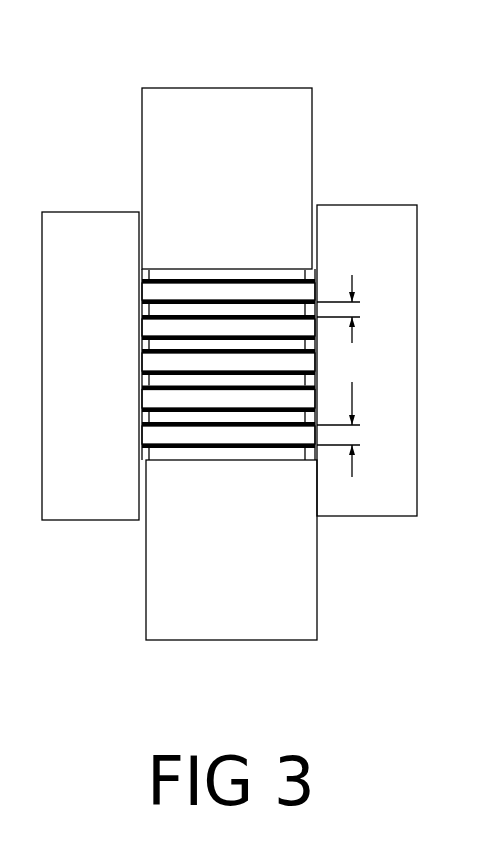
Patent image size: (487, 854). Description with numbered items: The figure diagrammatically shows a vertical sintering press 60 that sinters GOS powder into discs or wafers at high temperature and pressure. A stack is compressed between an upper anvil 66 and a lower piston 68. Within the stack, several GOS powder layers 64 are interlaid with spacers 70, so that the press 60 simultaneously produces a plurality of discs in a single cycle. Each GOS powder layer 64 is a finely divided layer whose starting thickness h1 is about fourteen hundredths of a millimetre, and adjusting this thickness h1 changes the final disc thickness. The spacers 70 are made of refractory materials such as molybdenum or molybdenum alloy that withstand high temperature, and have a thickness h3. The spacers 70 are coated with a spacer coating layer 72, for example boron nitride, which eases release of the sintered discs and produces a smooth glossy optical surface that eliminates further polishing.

The vertical sintering press 60 is at (381, 89).
The GOS powder layer 64 is at (187, 313).
The anvil 66 is at (226, 88).
The piston 68 is at (265, 640).
The spacer 70 is at (139, 327).
The spacer coating layer 72 is at (139, 448).
The starting thickness of GOS powder layer h1 is at (358, 304).
The thickness of spacer h3 is at (358, 429).